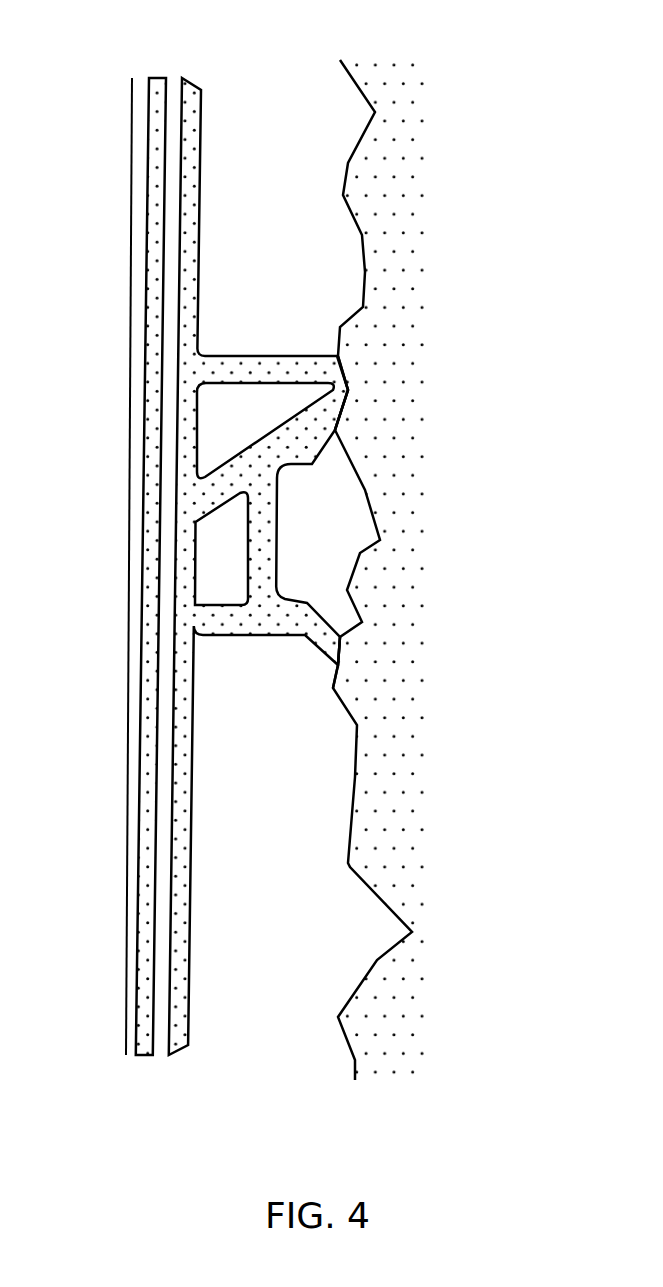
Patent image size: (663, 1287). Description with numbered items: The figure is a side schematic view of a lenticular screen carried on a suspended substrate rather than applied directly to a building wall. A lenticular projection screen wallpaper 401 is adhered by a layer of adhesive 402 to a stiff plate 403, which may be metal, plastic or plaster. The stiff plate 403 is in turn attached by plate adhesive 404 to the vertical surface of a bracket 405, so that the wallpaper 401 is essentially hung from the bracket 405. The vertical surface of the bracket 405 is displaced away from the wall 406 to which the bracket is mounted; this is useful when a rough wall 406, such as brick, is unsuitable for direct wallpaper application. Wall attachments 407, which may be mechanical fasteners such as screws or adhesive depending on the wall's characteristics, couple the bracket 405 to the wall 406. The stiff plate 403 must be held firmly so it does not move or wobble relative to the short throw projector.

The lenticular projection screen wallpaper 401 is at (127, 571).
The adhesive 402 is at (141, 79).
The stiff plate 403 is at (132, 1057).
The plate adhesive 404 is at (159, 1057).
The bracket 405 is at (252, 637).
The wall 406 is at (365, 272).
The wall attachments 407 is at (348, 390).